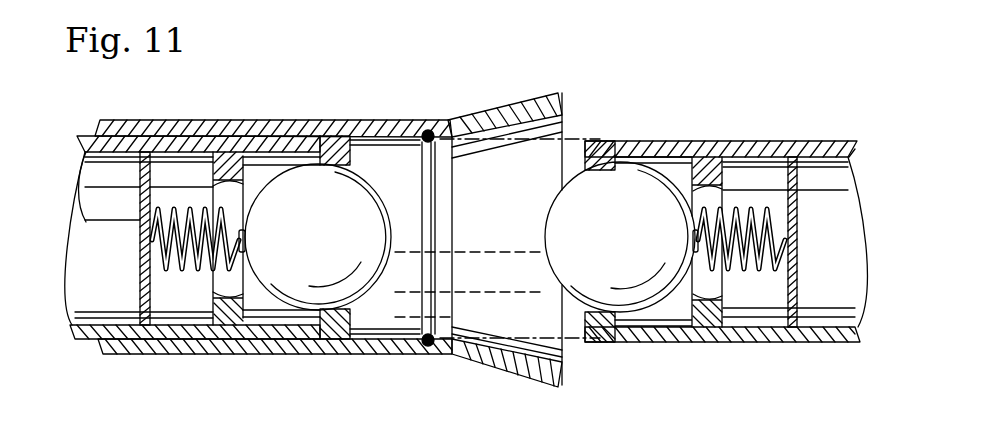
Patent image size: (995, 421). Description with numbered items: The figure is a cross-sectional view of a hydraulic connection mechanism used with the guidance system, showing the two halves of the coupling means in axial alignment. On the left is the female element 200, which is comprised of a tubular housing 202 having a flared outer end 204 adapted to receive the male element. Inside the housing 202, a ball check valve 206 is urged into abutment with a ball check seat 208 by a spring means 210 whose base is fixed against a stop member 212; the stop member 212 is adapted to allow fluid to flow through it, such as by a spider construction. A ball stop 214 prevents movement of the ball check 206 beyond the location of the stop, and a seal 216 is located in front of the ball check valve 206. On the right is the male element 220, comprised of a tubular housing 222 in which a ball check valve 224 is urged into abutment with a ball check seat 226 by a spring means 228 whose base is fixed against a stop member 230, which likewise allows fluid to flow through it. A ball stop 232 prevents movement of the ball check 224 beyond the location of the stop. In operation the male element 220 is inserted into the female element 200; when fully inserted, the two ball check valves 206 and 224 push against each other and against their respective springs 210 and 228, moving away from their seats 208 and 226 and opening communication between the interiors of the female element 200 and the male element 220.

The female element 200 is at (264, 121).
The tubular housing 202 is at (127, 120).
The flared outer end 204 is at (488, 118).
The ball check valve 206 is at (335, 247).
The ball check seat 208 is at (355, 156).
The spring means 210 is at (215, 284).
The stop member 212 is at (142, 253).
The ball stop 214 is at (195, 318).
The seal 216 is at (426, 150).
The male element 220 is at (751, 141).
The tubular housing 222 is at (620, 140).
The ball check valve 224 is at (640, 247).
The ball check seat 226 is at (562, 313).
The spring means 228 is at (712, 272).
The stop member 230 is at (797, 246).
The ball stop 232 is at (690, 318).